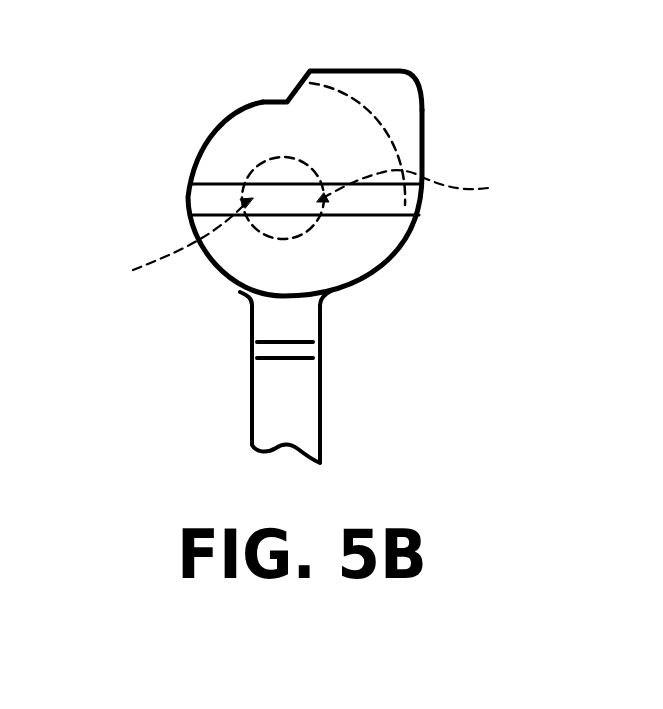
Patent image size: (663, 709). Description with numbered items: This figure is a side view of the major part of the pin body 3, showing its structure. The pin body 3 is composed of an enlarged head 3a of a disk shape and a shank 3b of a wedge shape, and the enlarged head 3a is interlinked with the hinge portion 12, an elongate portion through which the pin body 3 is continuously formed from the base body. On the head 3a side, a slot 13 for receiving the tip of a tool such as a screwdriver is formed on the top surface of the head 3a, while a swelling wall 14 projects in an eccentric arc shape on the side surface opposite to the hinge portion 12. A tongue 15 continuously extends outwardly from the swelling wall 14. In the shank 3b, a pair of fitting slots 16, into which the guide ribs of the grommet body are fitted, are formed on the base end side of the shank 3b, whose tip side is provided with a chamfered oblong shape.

The pin body 3 is at (178, 137).
The enlarged head 3a is at (355, 247).
The shank 3b is at (267, 157).
The hinge portion 12 is at (290, 419).
The slot 13 is at (200, 198).
The swelling wall 14 is at (387, 133).
The tongue 15 is at (377, 92).
The fitting slots 16 is at (311, 229).